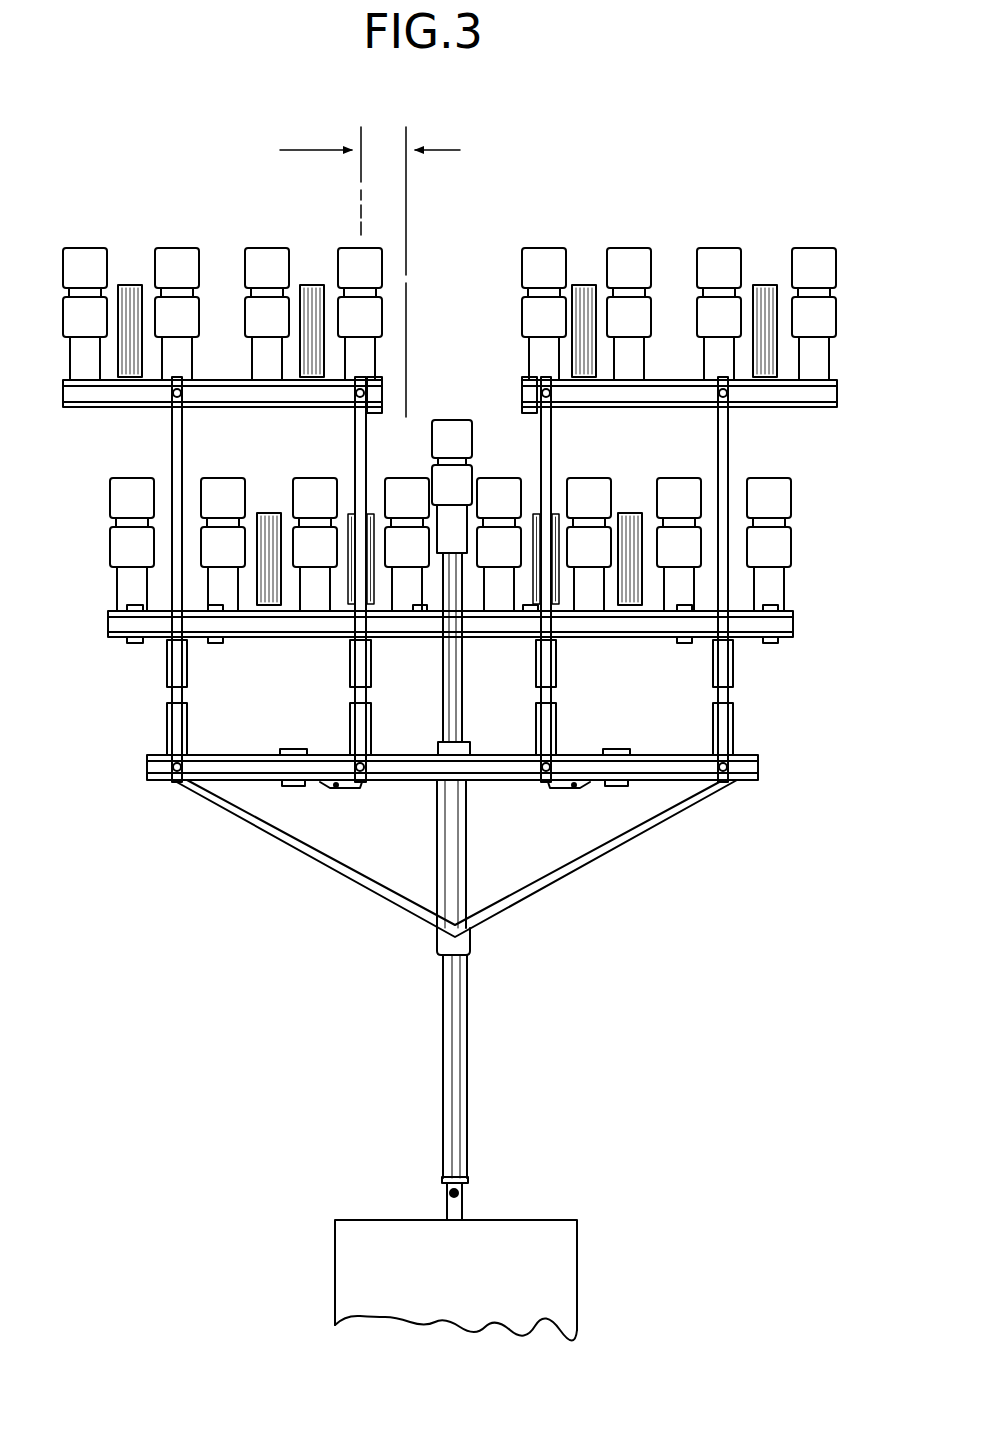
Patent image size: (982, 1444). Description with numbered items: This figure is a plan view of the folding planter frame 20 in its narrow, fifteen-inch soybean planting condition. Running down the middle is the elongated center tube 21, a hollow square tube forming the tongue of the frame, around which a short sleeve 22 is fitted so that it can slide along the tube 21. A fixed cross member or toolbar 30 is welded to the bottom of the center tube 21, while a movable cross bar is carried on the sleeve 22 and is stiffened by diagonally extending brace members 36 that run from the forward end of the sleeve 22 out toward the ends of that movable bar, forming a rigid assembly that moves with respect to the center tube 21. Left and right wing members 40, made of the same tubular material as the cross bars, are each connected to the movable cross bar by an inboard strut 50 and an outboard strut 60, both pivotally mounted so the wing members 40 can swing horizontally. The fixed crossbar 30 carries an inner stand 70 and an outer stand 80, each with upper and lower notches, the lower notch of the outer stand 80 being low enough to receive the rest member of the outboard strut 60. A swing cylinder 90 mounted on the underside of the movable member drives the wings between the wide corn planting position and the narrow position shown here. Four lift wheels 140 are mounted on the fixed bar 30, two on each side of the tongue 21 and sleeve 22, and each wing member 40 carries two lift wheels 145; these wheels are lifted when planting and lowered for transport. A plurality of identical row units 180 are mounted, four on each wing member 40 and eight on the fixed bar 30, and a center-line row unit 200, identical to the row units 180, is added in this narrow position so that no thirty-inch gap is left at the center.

The folding planter frame 20 is at (200, 1017).
The center tube 21 is at (467, 700).
The sleeve 22 is at (467, 838).
The fixed cross member or toolbar 30 is at (272, 642).
The diagonally extending brace members 36 is at (307, 847).
The wing member 40 is at (118, 420).
The inboard strut 50 is at (550, 433).
The outboard strut 60 is at (178, 437).
The inner stand 70 is at (400, 625).
The outer stand 80 is at (680, 640).
The swing cylinder 90 is at (342, 792).
The lift wheels 140 is at (267, 513).
The lift wheels 145 is at (130, 285).
The row units 180 is at (180, 247).
The center-line row unit 200 is at (448, 417).